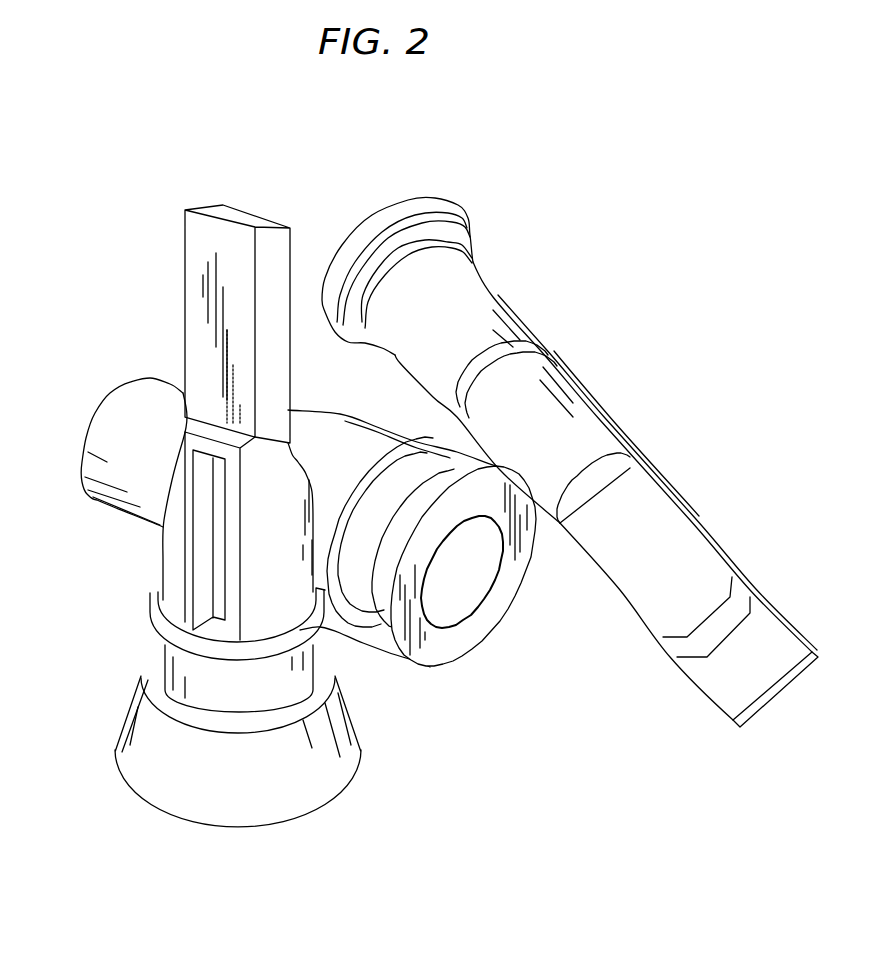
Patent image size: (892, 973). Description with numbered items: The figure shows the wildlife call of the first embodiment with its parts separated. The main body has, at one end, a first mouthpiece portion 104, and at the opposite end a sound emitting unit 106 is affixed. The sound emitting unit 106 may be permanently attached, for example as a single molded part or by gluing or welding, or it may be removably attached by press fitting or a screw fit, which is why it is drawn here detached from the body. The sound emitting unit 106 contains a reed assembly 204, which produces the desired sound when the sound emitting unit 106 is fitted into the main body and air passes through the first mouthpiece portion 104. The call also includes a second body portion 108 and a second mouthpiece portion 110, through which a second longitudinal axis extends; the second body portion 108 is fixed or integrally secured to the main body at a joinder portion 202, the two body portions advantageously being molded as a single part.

The first mouthpiece portion 104 is at (100, 420).
The sound emitting unit 106 is at (497, 300).
The second body portion 108 is at (188, 263).
The second mouthpiece portion 110 is at (323, 803).
The joinder portion 202 is at (318, 545).
The reed assembly 204 is at (678, 537).